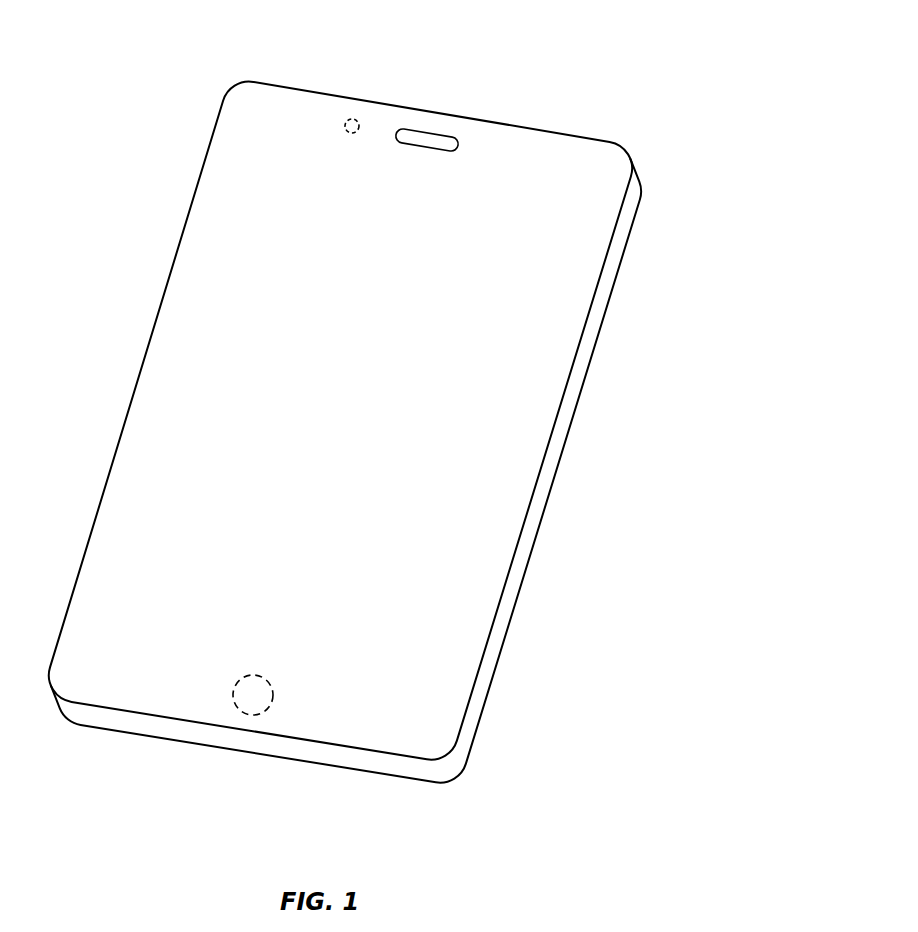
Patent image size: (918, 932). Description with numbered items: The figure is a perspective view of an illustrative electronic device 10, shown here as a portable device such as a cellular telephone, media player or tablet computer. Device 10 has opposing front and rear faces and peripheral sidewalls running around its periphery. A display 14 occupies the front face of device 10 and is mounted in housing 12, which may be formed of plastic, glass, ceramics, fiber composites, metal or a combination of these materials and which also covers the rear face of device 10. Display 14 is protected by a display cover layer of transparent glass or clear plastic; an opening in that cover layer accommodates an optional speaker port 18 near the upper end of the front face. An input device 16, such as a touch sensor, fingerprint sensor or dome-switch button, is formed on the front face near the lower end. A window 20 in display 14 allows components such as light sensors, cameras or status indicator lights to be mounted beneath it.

The electronic device 10 is at (598, 67).
The housing 12 is at (601, 300).
The display 14 is at (500, 435).
The input device 16 is at (243, 713).
The speaker port 18 is at (431, 130).
The windows 20 is at (355, 118).